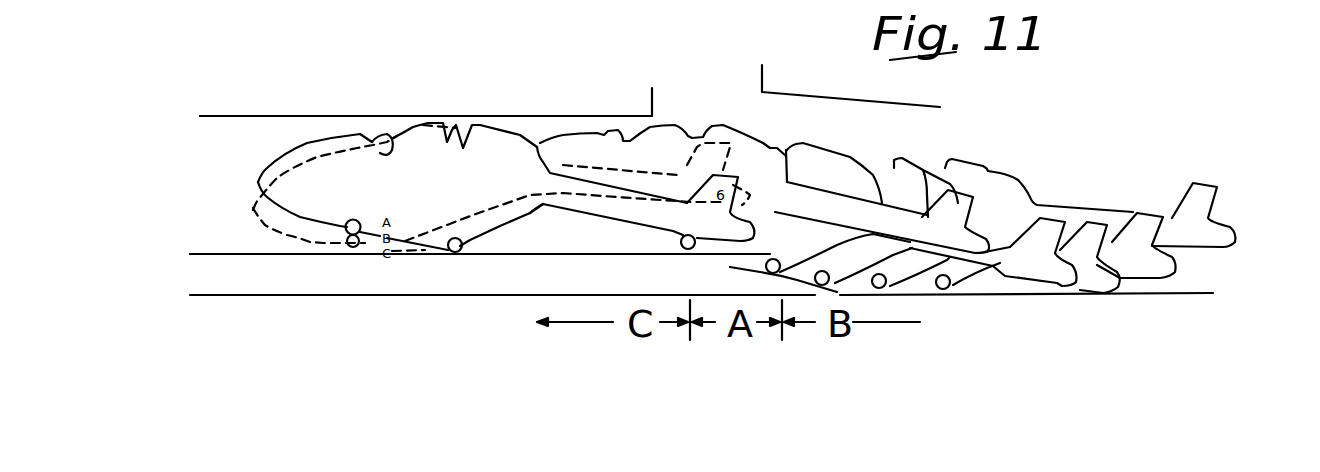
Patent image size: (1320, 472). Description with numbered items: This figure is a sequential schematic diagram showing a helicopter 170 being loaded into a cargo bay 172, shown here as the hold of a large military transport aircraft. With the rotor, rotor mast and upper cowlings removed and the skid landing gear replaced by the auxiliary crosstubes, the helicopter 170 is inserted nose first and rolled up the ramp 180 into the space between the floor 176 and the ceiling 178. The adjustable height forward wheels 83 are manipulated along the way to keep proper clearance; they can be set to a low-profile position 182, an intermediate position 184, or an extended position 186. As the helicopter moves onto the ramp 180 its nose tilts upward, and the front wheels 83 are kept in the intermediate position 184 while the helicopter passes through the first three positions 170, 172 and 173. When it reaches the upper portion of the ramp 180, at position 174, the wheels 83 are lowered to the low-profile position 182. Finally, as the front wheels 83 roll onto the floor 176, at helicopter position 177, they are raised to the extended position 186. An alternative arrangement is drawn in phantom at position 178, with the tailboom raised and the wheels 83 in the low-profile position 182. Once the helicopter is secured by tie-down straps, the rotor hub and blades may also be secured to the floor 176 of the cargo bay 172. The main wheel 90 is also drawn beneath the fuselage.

The helicopter 170 is at (1211, 183).
The cargo bay 172 is at (496, 113).
The helicopter position 173 is at (1102, 227).
The helicopter position 174 is at (1055, 225).
The floor 176 is at (226, 254).
The helicopter position 177 is at (993, 210).
The ceiling 178 is at (238, 116).
The ramp 180 is at (765, 270).
The low-profile position 182 is at (392, 225).
The intermediate position 184 is at (380, 230).
The extended position 186 is at (413, 243).
The adjustable height forward wheels 83 is at (355, 250).
The main wheel 90 is at (457, 253).